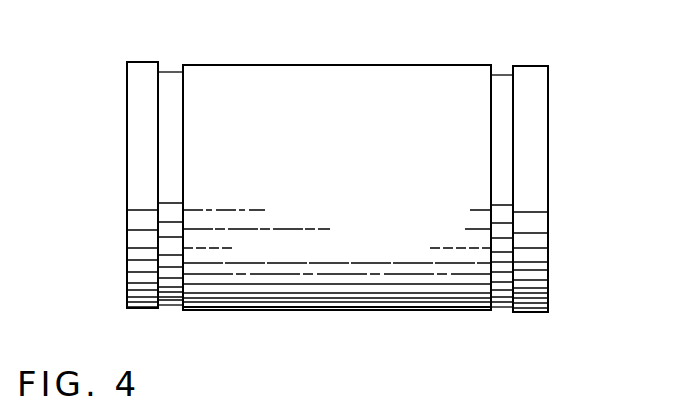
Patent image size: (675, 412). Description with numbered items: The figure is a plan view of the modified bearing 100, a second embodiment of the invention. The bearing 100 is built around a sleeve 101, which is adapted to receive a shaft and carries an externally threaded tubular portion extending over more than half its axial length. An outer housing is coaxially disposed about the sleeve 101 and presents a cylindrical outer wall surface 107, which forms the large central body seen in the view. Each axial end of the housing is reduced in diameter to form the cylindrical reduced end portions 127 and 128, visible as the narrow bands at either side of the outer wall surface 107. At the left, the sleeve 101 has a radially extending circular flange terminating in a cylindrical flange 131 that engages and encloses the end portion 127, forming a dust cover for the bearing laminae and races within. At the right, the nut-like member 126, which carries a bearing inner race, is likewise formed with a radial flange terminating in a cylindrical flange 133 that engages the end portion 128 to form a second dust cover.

The bearing 100 is at (383, 65).
The sleeve 101 is at (126, 165).
The cylindrical outer wall surface 107 is at (392, 292).
The nut-like member 126 is at (548, 147).
The reduced end portion 127 is at (160, 305).
The reduced end portion 128 is at (505, 308).
The cylindrical flange 131 is at (141, 190).
The thread lines on right end member 133 is at (540, 182).